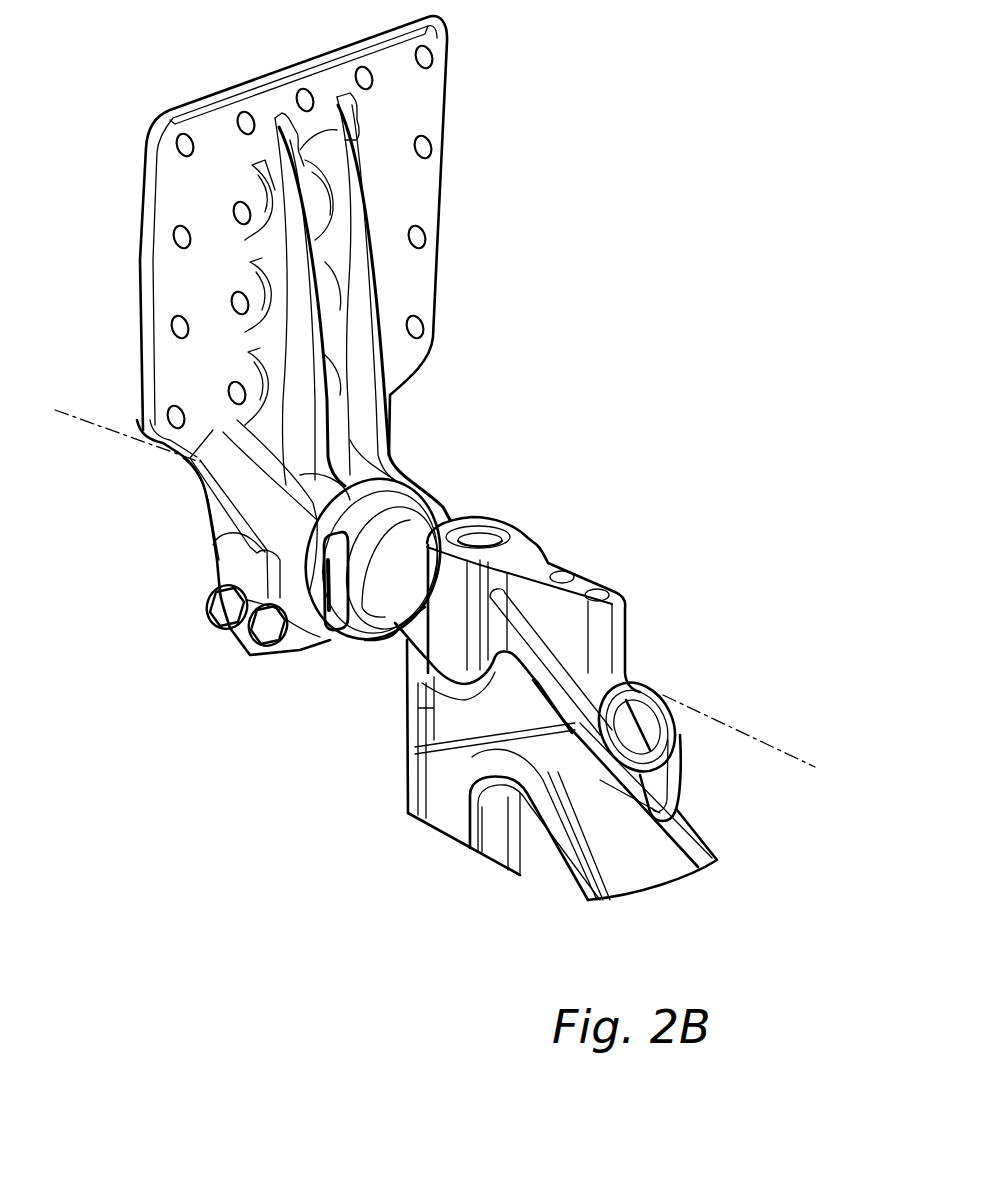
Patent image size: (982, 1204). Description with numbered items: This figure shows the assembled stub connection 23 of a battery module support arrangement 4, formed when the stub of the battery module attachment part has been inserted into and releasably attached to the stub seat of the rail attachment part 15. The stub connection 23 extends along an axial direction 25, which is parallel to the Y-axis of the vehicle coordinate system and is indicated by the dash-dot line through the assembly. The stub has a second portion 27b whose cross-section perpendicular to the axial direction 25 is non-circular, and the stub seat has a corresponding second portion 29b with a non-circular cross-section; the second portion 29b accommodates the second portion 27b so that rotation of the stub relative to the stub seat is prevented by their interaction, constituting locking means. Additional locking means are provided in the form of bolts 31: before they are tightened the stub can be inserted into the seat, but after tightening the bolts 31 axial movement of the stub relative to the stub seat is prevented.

The pedal assembly 4 is at (578, 300).
The rail attachment part 15 is at (463, 155).
The stub connection 23 is at (464, 440).
The axial direction 25 is at (735, 728).
The second portion of the stub 27b is at (342, 646).
The second portion of the stub seat 29b is at (452, 503).
The bolts 31 is at (222, 657).